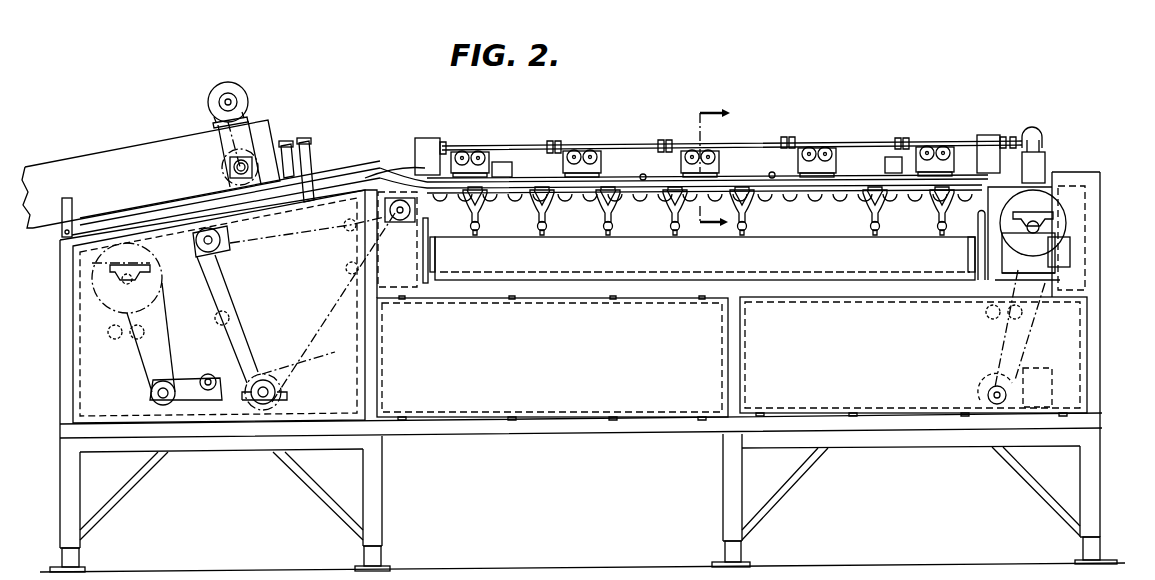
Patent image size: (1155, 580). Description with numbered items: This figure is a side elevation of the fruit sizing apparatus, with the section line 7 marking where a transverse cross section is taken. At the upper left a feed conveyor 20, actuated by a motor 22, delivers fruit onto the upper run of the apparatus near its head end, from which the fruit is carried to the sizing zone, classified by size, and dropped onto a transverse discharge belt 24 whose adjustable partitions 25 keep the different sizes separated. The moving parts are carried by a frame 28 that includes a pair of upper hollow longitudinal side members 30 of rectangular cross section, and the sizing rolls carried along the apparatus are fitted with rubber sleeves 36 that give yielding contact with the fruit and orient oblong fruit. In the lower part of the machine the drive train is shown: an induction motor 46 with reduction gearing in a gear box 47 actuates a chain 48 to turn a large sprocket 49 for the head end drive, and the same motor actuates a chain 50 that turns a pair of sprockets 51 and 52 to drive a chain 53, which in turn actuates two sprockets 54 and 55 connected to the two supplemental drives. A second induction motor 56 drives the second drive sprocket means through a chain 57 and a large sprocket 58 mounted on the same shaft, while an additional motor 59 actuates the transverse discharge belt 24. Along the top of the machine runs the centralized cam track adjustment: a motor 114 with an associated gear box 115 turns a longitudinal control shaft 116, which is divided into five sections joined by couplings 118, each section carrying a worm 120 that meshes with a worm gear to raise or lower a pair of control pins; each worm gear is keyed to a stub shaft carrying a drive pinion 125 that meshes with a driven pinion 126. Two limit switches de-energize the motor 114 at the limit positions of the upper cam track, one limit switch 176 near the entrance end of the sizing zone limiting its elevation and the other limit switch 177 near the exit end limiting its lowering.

The feed conveyor 20 is at (135, 136).
The motor 22 is at (247, 98).
The transverse discharge belt 24 is at (583, 258).
The adjustable partitions 25 is at (603, 227).
The frame 28 is at (1104, 358).
The upper hollow longitudinal side members 30 is at (337, 188).
The rubber sleeves 36 is at (936, 199).
The induction motor 46 is at (195, 378).
The gear box 47 is at (174, 384).
The chain 48 is at (148, 352).
The large sprocket 49 is at (93, 285).
The chain 50 is at (233, 368).
The sprocket 51 is at (283, 392).
The sprocket 52 is at (285, 380).
The chain 53 is at (317, 318).
The sprocket 54 is at (232, 244).
The sprocket 55 is at (400, 222).
The induction motor 56 is at (1033, 368).
The chain 57 is at (1005, 336).
The large sprocket 58 is at (1070, 226).
The motor 59 is at (1057, 260).
The motor 114 is at (1046, 153).
The gear box 115 is at (1042, 130).
The longitudinal control shaft 116 is at (849, 146).
The couplings 118 is at (788, 137).
The worm 120 is at (456, 146).
The drive pinion 125 is at (588, 145).
The driven pinion 126 is at (602, 148).
The limit switch 176 is at (502, 162).
The limit switch 177 is at (890, 157).
The section line 7- 7 is at (721, 165).